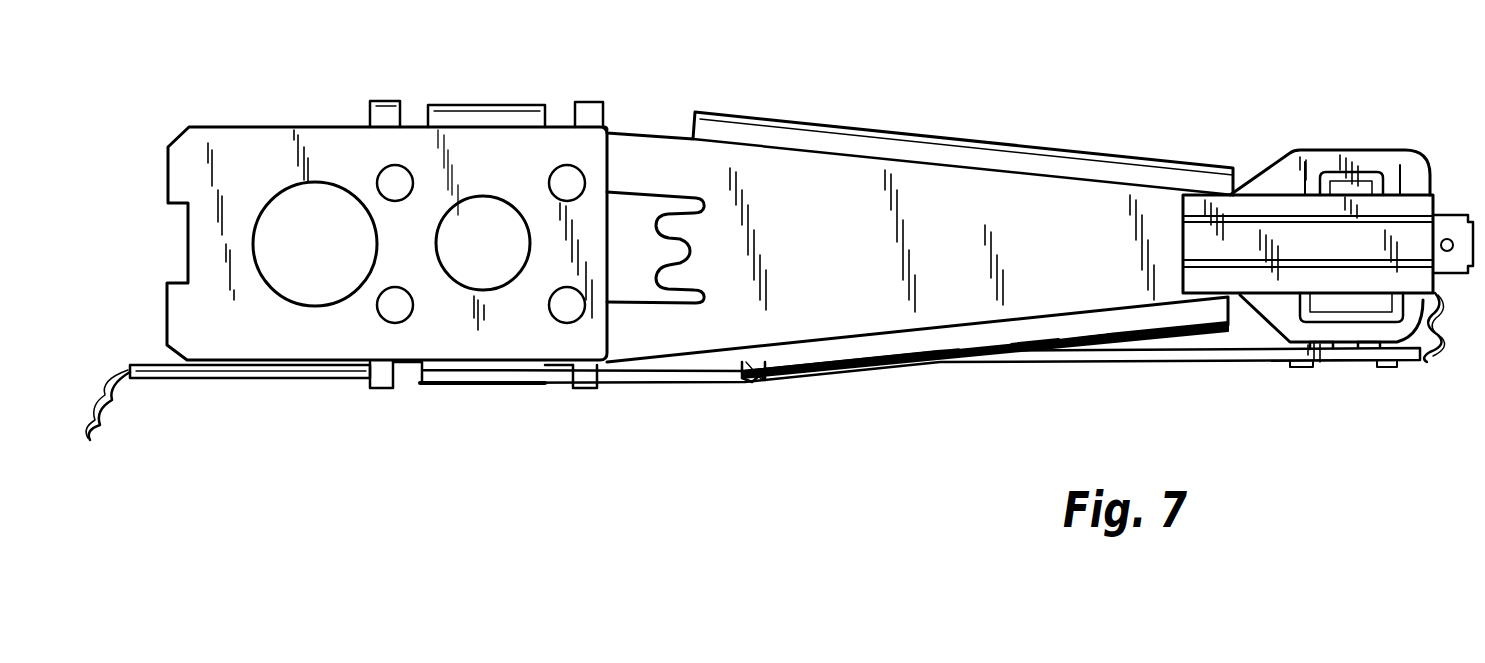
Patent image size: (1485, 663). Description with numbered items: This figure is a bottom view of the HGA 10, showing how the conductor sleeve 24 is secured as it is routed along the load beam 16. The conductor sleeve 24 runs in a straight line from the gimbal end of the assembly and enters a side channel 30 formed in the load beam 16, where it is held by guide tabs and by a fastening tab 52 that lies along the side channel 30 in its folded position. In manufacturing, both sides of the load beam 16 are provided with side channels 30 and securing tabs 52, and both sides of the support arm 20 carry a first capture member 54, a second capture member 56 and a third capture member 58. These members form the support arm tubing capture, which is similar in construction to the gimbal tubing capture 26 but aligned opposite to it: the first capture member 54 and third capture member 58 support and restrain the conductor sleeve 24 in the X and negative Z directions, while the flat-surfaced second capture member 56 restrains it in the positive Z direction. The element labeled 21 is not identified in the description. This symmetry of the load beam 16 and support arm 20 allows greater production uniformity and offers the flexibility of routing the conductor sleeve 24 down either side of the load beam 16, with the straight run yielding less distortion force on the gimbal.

The HGA 10 is at (779, 253).
The load beam 16 is at (1020, 190).
The support arm 20 is at (345, 346).
The plate corner 21 is at (592, 96).
The conductor sleeve 24 is at (160, 373).
The gimbal tubing capture 26 is at (1392, 373).
The side channel 30 is at (890, 358).
The fastening tab 52 is at (765, 370).
The first capture member 54 is at (585, 113).
The second capture member 56 is at (455, 132).
The third capture member 58 is at (384, 91).